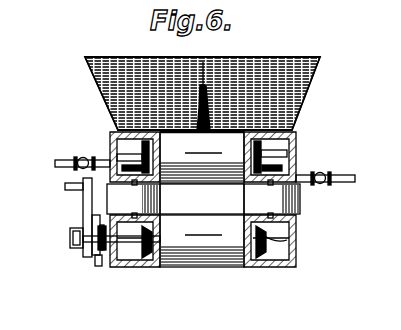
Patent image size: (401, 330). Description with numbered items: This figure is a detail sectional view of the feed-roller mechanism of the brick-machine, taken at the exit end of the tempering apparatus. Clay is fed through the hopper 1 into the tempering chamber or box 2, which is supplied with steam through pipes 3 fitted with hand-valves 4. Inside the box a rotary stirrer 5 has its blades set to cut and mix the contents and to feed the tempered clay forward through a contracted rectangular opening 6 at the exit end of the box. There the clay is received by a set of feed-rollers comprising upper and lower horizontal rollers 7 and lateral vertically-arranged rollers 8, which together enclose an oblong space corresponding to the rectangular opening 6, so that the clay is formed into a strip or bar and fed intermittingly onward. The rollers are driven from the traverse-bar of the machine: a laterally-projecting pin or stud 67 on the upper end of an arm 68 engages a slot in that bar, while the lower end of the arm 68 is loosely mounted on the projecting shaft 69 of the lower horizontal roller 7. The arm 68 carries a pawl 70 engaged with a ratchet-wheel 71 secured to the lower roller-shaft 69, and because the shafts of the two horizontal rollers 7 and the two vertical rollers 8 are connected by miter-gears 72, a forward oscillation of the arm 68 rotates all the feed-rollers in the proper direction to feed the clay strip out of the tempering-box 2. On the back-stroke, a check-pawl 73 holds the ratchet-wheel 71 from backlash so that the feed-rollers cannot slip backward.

The hopper 1 is at (124, 58).
The tempering chamber or box 2 is at (142, 150).
The pipes 3 is at (55, 163).
The hand-valves 4 is at (80, 158).
The rotary stirrer 5 is at (206, 96).
The contracted rectangular opening 6 is at (202, 199).
The horizontal rollers 7 is at (202, 199).
The lateral vertically-arranged rollers 8 is at (203, 199).
The laterally-projecting pin or stud 67 is at (65, 186).
The arm 68 is at (83, 204).
The projecting shaft 69 is at (128, 242).
The pawl 70 is at (95, 230).
The ratchet-wheel 71 is at (97, 255).
The miter-gears 72 is at (118, 136).
The check-pawl 73 is at (99, 266).